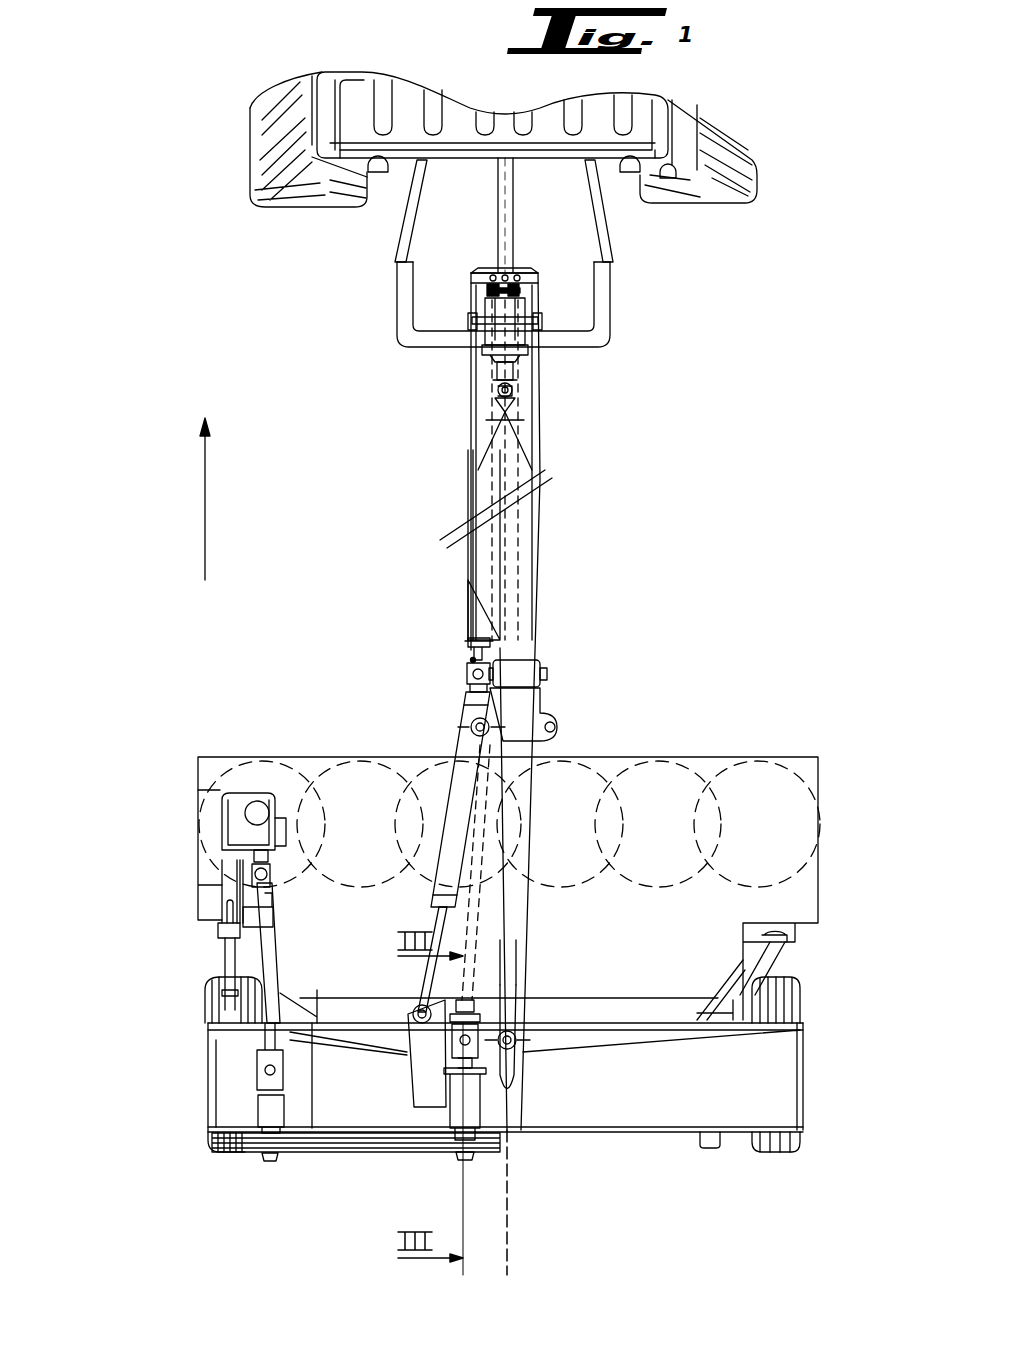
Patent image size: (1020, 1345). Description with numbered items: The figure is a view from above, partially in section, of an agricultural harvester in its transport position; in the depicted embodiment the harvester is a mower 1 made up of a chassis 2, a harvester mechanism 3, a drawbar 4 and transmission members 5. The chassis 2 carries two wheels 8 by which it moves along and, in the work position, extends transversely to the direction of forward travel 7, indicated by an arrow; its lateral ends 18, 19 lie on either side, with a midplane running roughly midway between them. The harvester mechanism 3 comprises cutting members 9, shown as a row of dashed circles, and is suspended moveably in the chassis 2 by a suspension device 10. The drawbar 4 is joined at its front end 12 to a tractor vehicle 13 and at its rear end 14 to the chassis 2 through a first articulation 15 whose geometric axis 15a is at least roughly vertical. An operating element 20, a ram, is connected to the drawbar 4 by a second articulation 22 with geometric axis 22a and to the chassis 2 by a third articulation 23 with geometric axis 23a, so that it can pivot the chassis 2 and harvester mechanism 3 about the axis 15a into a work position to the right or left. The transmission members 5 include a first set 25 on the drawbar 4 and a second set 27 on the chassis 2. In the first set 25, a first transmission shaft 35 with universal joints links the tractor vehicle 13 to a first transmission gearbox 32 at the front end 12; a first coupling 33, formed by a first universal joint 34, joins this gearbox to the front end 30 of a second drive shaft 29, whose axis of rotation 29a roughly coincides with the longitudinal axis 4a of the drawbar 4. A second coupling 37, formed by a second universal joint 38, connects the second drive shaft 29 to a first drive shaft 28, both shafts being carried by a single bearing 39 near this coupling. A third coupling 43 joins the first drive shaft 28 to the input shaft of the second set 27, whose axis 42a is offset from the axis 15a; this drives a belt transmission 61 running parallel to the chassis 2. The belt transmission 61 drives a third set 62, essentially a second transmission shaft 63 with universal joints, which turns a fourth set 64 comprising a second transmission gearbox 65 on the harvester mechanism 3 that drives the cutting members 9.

The mower 1 is at (548, 559).
The chassis 2 is at (630, 1127).
The harvester mechanism 3 is at (800, 752).
The drawbar 4 is at (545, 447).
The longitudinal axis of the drawbar 4a is at (507, 1250).
The transmission members 5 is at (478, 352).
The direction of forward travel 7 is at (207, 560).
The wheels 8 is at (215, 1000).
The cutting members 9 is at (300, 757).
The suspension device 10 is at (215, 962).
The front end of the drawbar 12 is at (545, 288).
The tractor vehicle 13 is at (737, 207).
The rear end of the drawbar 14 is at (497, 1147).
The first articulation 15 is at (512, 1038).
The geometric axis of the first articulation 15a is at (516, 1046).
The lateral end of the chassis 18 is at (200, 1122).
The lateral end of the chassis 19 is at (810, 1126).
The operating element 20 is at (428, 906).
The second articulation 22 is at (474, 727).
The geometric axis of the second articulation 22a is at (487, 725).
The third articulation 23 is at (412, 1008).
The geometric axis of the third articulation 23a is at (418, 1006).
The first set 25 is at (465, 556).
The second set 27 is at (445, 1120).
The first drive shaft 28 is at (500, 915).
The second drive shaft 29 is at (500, 560).
The axis of rotation of the second drive shaft 29a is at (485, 545).
The front end of the second drive shaft 30 is at (498, 392).
The first transmission gearbox 32 is at (487, 302).
The first coupling 33 is at (515, 392).
The first universal joint 34 is at (520, 398).
The first transmission shaft with universal joints 35 is at (510, 222).
The second coupling 37 is at (458, 655).
The second universal joint 38 is at (467, 675).
The bearing 39 is at (468, 641).
The axis of rotation of the input shaft 42a is at (463, 1215).
The third coupling 43 is at (445, 1042).
The belt transmission 61 is at (330, 1152).
The third set 62 is at (255, 1040).
The second transmission shaft with universal joints 63 is at (275, 970).
The fourth set 64 is at (237, 800).
The second transmission gearbox 65 is at (240, 830).